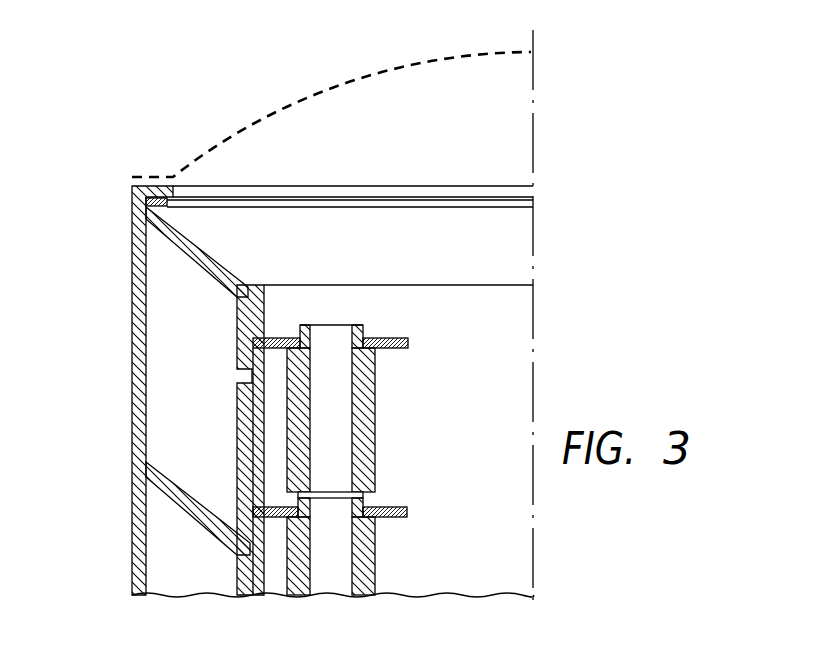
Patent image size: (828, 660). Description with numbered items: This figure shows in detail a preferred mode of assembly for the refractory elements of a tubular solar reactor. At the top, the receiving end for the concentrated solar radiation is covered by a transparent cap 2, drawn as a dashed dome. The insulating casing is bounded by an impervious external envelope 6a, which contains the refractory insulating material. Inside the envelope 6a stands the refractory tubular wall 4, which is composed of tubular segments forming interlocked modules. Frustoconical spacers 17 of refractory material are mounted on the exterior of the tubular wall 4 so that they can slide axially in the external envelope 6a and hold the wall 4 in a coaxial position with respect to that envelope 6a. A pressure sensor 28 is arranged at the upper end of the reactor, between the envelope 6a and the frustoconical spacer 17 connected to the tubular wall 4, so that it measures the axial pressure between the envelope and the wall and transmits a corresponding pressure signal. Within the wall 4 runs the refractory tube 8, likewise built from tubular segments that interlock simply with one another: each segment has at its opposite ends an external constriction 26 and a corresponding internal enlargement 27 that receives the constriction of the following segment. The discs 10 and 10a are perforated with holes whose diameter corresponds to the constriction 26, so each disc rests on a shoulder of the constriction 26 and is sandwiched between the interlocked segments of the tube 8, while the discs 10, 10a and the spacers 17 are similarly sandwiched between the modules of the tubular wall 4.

The transparent cap 2 is at (357, 80).
The impervious external envelope 6a is at (133, 393).
The pressure sensor 28 is at (168, 204).
The refractory tubular wall 4 is at (237, 439).
The frustoconical spacers 17 is at (203, 262).
The refractory tube 8 is at (375, 428).
The external constriction 26 is at (365, 333).
The disc 10 is at (408, 341).
The internal enlargement 27 is at (353, 497).
The disc 10a is at (407, 511).